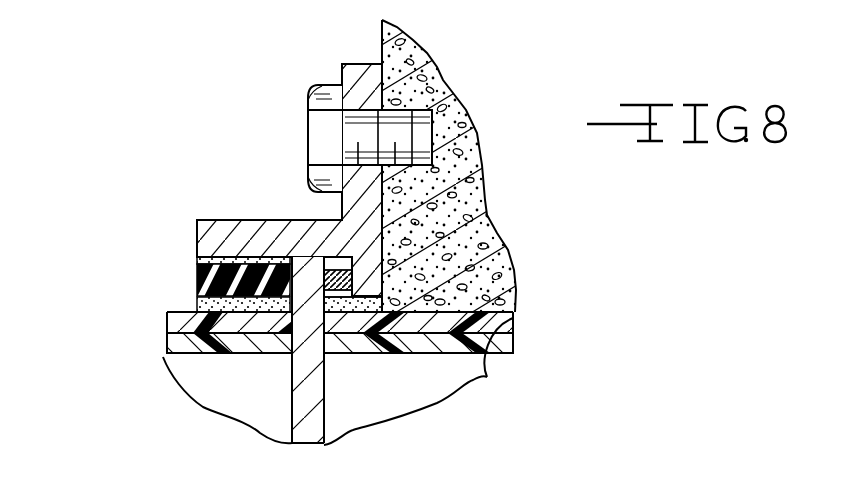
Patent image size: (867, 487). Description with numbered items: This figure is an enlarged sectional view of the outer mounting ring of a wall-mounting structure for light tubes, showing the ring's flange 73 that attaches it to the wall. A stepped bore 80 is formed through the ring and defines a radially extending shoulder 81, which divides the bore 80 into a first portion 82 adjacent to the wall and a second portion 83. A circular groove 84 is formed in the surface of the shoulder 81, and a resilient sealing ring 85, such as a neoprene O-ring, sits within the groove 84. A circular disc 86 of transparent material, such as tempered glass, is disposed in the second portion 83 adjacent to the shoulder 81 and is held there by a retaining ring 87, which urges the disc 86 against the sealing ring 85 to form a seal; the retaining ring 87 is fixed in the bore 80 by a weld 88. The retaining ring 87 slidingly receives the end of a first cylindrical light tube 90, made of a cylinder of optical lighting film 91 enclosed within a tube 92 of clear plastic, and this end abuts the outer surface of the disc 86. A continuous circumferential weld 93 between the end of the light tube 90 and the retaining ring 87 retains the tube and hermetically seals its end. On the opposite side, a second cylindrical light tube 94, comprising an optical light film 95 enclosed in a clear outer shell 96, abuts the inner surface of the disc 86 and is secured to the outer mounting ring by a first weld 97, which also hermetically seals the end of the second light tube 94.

The flange 73 is at (360, 72).
The stepped bore 80 is at (100, 287).
The shoulder 81 is at (324, 385).
The first portion 82 is at (352, 290).
The second portion 83 is at (262, 258).
The circular groove 84 is at (388, 281).
The resilient sealing ring 85 is at (343, 268).
The circular disc 86 is at (305, 428).
The retaining ring 87 is at (197, 278).
The weld 88 is at (195, 261).
The first cylindrical light tube 90 is at (233, 397).
The optical lighting film 91 is at (173, 352).
The tube 92 is at (177, 330).
The continuous circumferential weld 93 is at (197, 305).
The second cylindrical light tube 94 is at (487, 377).
The optical light film 95 is at (513, 345).
The clear outer shell 96 is at (513, 320).
The first weld 97 is at (388, 304).